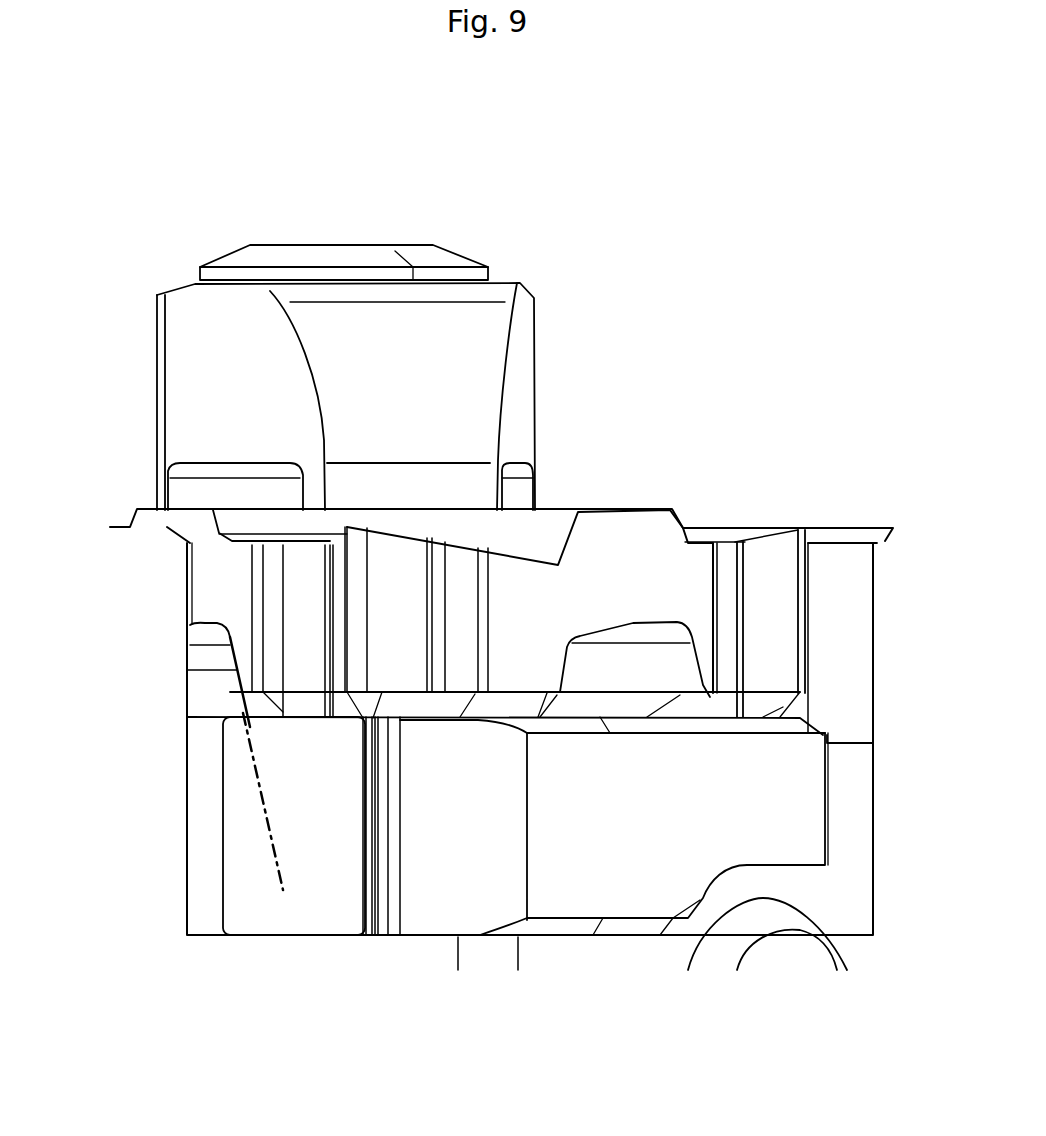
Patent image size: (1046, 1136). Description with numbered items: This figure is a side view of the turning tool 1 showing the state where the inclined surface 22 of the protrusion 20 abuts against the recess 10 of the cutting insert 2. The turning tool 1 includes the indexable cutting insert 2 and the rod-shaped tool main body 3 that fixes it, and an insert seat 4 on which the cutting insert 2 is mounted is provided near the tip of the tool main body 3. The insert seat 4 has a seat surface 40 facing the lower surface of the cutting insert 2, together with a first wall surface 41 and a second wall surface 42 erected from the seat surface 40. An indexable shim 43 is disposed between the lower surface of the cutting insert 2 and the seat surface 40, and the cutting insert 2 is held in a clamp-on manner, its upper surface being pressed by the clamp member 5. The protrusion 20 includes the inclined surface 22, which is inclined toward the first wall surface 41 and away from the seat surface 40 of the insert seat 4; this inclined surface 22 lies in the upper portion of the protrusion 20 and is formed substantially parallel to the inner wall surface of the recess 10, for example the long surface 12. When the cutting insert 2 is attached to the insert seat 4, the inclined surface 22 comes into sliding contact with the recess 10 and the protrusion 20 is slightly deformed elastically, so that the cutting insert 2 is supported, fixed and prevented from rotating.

The turning tool 1 is at (510, 1090).
The cutting insert 2 is at (712, 522).
The tool main body 3 is at (844, 518).
The insert seat 4 is at (810, 922).
The clamp member 5 is at (498, 280).
The recess 10 is at (233, 658).
The long surface 12 is at (141, 569).
The protrusion 20 is at (230, 685).
The inclined surface 22 is at (147, 698).
The seat surface 40 is at (302, 932).
The first wall surface 41 is at (190, 857).
The second wall surface 42 is at (843, 702).
The shim 43 is at (808, 827).